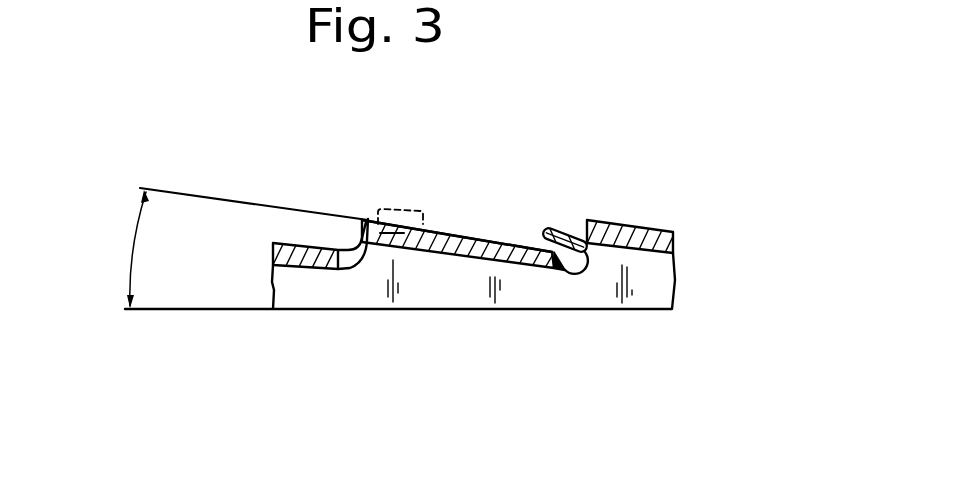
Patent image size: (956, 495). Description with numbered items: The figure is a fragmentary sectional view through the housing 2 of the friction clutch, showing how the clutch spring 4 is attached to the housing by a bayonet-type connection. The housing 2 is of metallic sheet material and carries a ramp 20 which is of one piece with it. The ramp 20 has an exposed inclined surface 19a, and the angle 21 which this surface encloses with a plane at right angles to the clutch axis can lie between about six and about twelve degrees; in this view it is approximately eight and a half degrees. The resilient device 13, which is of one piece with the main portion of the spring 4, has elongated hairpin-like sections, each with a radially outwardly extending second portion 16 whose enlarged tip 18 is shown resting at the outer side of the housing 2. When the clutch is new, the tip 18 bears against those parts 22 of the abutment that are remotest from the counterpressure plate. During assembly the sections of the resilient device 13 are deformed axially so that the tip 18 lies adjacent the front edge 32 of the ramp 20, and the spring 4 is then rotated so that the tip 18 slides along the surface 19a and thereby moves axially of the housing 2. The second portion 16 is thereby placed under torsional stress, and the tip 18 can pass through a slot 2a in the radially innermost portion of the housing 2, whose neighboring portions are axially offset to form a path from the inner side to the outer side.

The housing 2 is at (657, 277).
The slots 2a is at (569, 268).
The clutch spring 4 is at (571, 233).
The resilient device 13 is at (415, 212).
The second portion 16 is at (560, 233).
The tip 18 is at (391, 207).
The exposed surface of ramp 19a is at (527, 238).
The ramp 20 is at (472, 233).
The angle 21 is at (133, 263).
The parts of abutments remotest from counterpressure plate 22 is at (385, 233).
The edges of ramps 32 is at (560, 264).